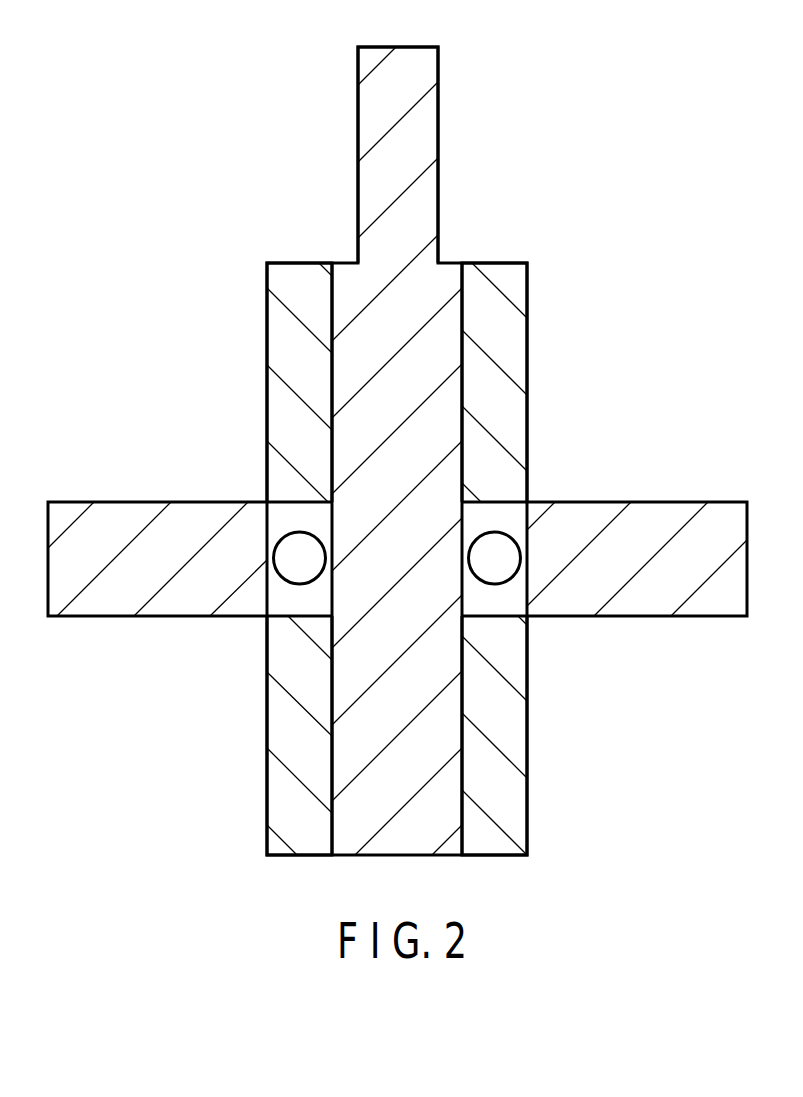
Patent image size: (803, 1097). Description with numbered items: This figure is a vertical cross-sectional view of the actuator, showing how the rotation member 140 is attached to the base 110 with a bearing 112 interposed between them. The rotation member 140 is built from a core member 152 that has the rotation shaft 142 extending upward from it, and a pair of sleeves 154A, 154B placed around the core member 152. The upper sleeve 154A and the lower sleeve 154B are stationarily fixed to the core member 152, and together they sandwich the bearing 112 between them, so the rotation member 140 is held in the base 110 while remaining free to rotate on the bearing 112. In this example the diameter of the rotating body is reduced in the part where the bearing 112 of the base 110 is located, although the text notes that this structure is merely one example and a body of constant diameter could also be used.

The base 110 is at (119, 510).
The bearing 112 is at (513, 510).
The rotation member 140 is at (528, 208).
The rotation shaft 142 is at (368, 112).
The core member 152 is at (347, 358).
The sleeve 154A is at (518, 360).
The sleeve 154B is at (518, 750).